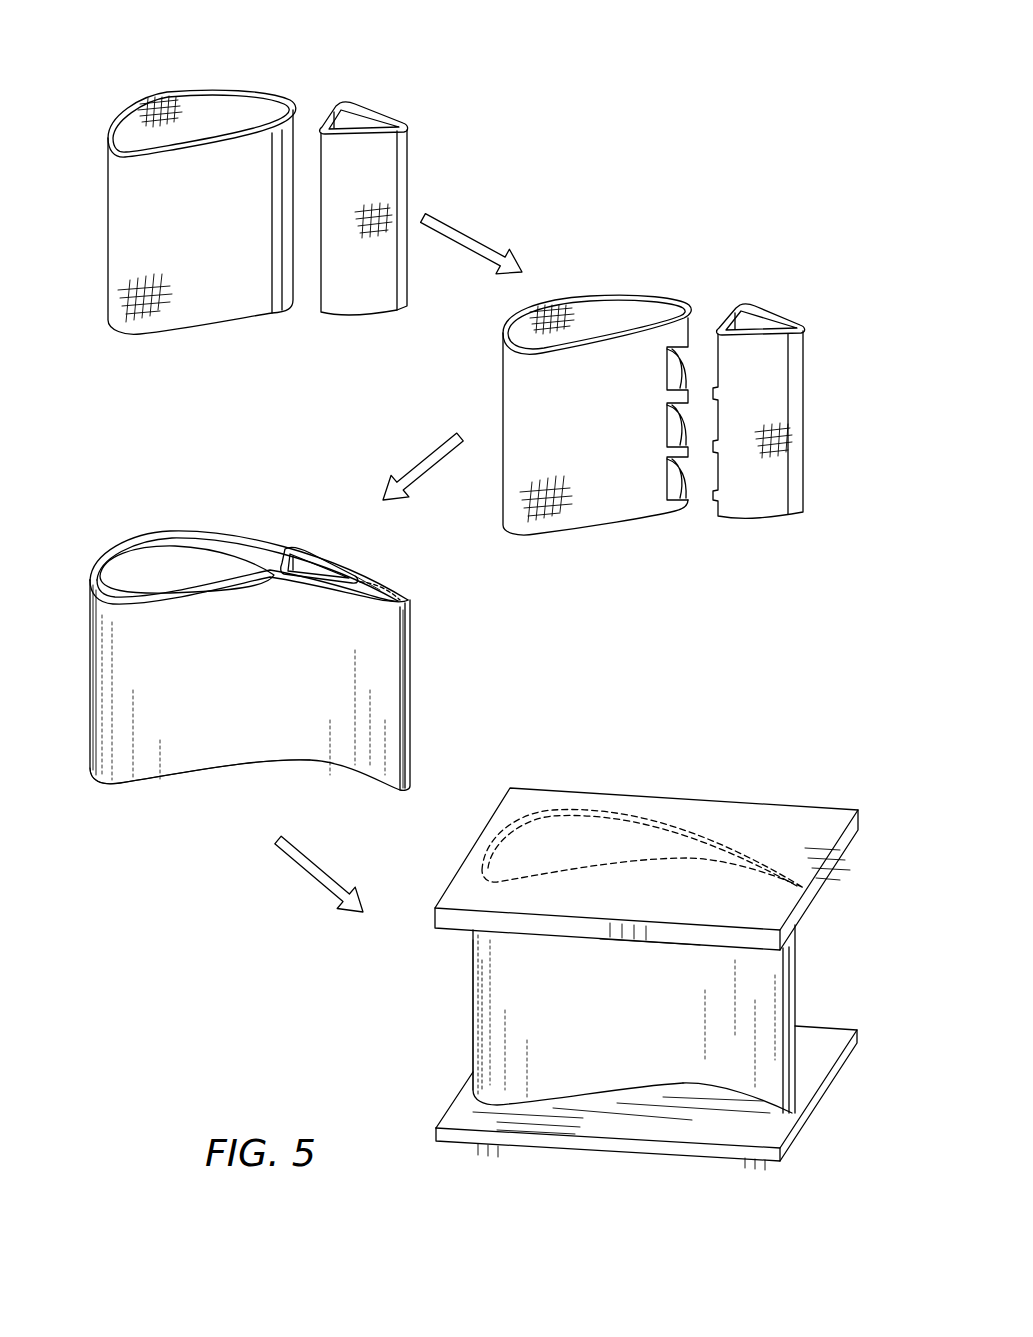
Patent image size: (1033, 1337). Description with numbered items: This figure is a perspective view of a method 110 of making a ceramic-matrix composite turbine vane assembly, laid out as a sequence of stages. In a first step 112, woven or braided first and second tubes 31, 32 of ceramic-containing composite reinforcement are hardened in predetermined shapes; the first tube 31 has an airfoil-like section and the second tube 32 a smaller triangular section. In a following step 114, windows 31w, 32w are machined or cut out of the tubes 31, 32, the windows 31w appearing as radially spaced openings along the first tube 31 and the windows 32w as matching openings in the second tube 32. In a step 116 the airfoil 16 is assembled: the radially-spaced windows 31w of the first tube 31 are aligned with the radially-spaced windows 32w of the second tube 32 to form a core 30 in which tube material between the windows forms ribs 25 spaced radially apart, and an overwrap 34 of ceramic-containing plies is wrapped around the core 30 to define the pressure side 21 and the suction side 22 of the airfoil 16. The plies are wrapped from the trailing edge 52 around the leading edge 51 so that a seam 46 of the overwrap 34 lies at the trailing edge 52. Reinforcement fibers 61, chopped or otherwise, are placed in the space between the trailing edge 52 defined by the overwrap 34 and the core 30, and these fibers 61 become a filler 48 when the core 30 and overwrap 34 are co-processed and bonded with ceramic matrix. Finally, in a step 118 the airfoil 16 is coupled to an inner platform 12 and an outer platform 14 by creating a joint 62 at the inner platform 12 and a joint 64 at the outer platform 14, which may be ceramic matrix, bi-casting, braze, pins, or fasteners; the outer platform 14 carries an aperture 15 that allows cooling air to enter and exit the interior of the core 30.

The method 110 is at (604, 95).
The step 112 is at (431, 128).
The step 114 is at (756, 277).
The step 116 is at (160, 520).
The step 118 is at (692, 766).
The core 30 is at (445, 725).
The first tube 31 is at (377, 327).
The second tube 32 is at (572, 342).
The windows 31w is at (668, 362).
The windows 32w is at (708, 412).
The suction side 22 is at (186, 534).
The ribs 25 is at (255, 552).
The reinforcement fibers 61 is at (371, 568).
The filler 48 is at (399, 577).
The overwrap 34 is at (115, 635).
The leading edge 51 is at (90, 712).
The trailing edge 52 is at (412, 640).
The seam 46 is at (415, 703).
The pressure side 21 is at (228, 745).
The aperture 15 is at (550, 808).
The outer platform 14 is at (646, 880).
The airfoil 16 is at (453, 998).
The joint 64 is at (676, 950).
The joint 62 is at (668, 1092).
The inner platform 12 is at (460, 1121).